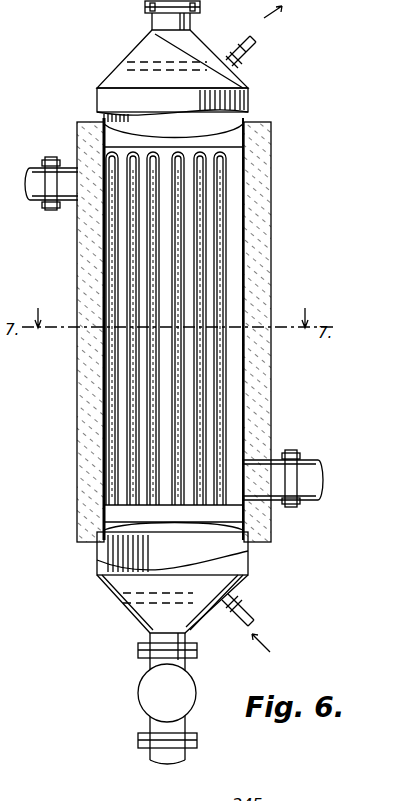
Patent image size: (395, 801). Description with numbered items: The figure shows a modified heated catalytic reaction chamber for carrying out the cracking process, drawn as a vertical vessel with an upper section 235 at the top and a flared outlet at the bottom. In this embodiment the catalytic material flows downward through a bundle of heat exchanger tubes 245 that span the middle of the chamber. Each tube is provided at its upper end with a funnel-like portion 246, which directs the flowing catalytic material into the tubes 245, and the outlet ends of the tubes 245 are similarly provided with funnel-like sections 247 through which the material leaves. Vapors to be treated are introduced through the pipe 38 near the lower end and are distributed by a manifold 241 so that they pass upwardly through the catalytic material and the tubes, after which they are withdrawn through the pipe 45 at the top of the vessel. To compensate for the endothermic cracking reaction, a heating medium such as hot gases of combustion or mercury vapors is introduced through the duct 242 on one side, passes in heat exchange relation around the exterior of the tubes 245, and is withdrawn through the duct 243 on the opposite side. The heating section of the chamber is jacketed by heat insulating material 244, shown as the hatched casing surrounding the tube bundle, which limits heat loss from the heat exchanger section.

The upper section 235 is at (250, 95).
The pipe 45 is at (242, 38).
The insulating jacket 244 is at (272, 283).
The funnel-like portions 246 is at (229, 157).
The heat exchanger tubes 245 is at (220, 240).
The duct 242 is at (36, 204).
The duct 243 is at (309, 462).
The funnel-like sections 247 is at (104, 514).
The manifold 241 is at (140, 603).
The pipe 38 is at (240, 622).